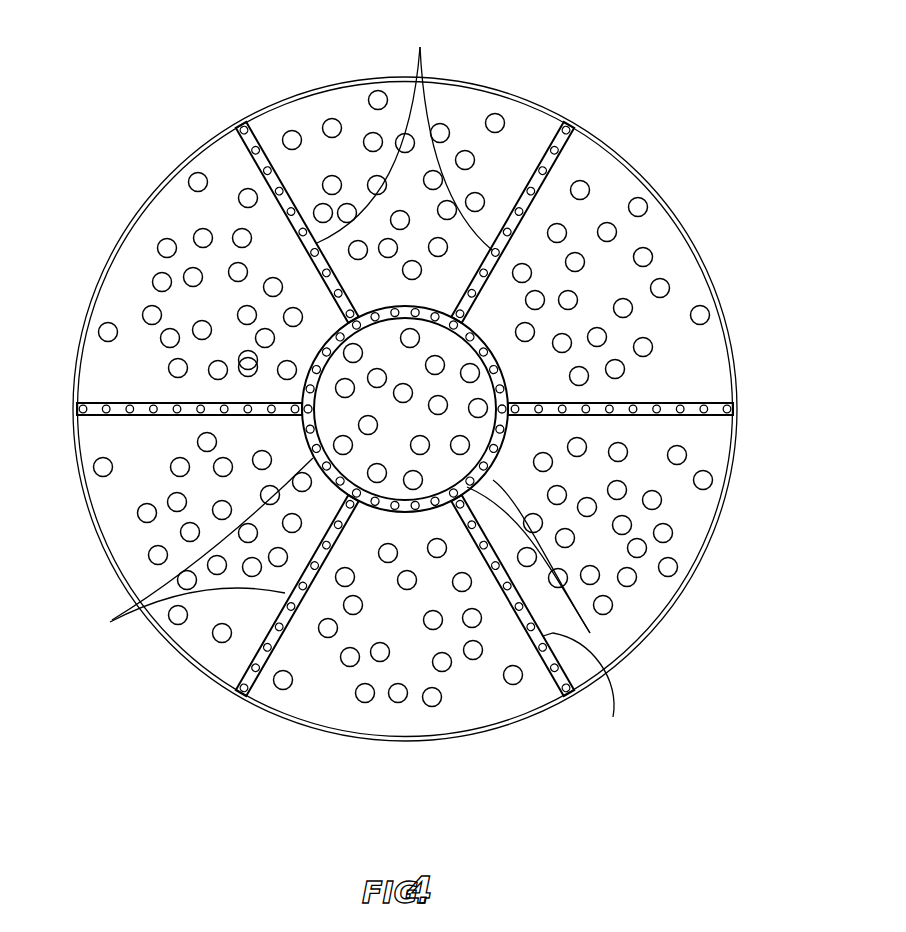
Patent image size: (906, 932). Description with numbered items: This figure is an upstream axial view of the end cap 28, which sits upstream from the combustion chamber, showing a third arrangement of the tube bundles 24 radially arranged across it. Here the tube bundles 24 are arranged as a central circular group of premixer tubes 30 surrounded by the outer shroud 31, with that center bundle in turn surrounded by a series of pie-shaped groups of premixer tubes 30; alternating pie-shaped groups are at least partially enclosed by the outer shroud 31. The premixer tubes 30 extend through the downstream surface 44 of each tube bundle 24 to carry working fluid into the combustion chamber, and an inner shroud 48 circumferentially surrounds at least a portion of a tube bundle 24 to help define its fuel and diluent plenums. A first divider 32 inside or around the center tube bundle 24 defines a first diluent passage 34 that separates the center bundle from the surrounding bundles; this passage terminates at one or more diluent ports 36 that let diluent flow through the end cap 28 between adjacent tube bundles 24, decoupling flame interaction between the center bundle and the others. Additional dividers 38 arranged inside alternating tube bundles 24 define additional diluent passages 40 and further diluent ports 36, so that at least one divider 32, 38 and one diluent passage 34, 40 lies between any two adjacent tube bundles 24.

The tube bundle 24 is at (466, 397).
The end cap 28 is at (724, 302).
The premixer tube 30 is at (336, 118).
The outer shroud 31 is at (362, 385).
The first divider 32 is at (358, 510).
The first diluent passage 34 is at (370, 505).
The diluent port 36 is at (103, 404).
The additional divider 38 is at (246, 158).
The additional diluent passage 40 is at (115, 404).
The downstream surface 44 is at (530, 122).
The inner shroud 48 is at (313, 348).